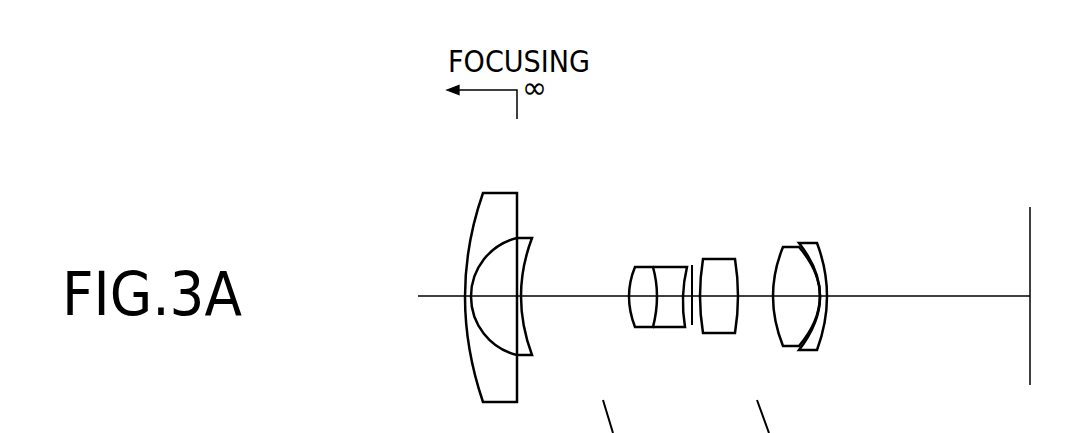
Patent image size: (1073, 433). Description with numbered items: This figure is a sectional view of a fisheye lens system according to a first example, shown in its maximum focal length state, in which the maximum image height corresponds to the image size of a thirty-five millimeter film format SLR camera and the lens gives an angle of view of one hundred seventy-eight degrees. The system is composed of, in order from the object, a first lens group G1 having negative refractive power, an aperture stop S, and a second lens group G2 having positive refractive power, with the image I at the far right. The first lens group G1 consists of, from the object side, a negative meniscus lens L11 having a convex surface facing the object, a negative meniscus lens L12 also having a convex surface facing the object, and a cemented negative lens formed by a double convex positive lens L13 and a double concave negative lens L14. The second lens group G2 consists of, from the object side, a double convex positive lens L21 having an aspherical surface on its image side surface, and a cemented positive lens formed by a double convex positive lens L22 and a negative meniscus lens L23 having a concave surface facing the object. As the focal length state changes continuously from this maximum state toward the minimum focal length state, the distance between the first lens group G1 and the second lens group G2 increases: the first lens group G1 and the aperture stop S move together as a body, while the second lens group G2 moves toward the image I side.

The first lens group G1 is at (691, 128).
The second lens group G2 is at (824, 130).
The negative meniscus lens L11 is at (503, 193).
The negative meniscus lens L12 is at (525, 238).
The double convex positive lens L13 is at (642, 267).
The double concave negative lens L14 is at (670, 267).
The double convex positive lens L21 is at (727, 259).
The double convex positive lens L22 is at (790, 247).
The negative meniscus lens L23 is at (808, 243).
The aperture stop S is at (692, 265).
The image I is at (1030, 207).